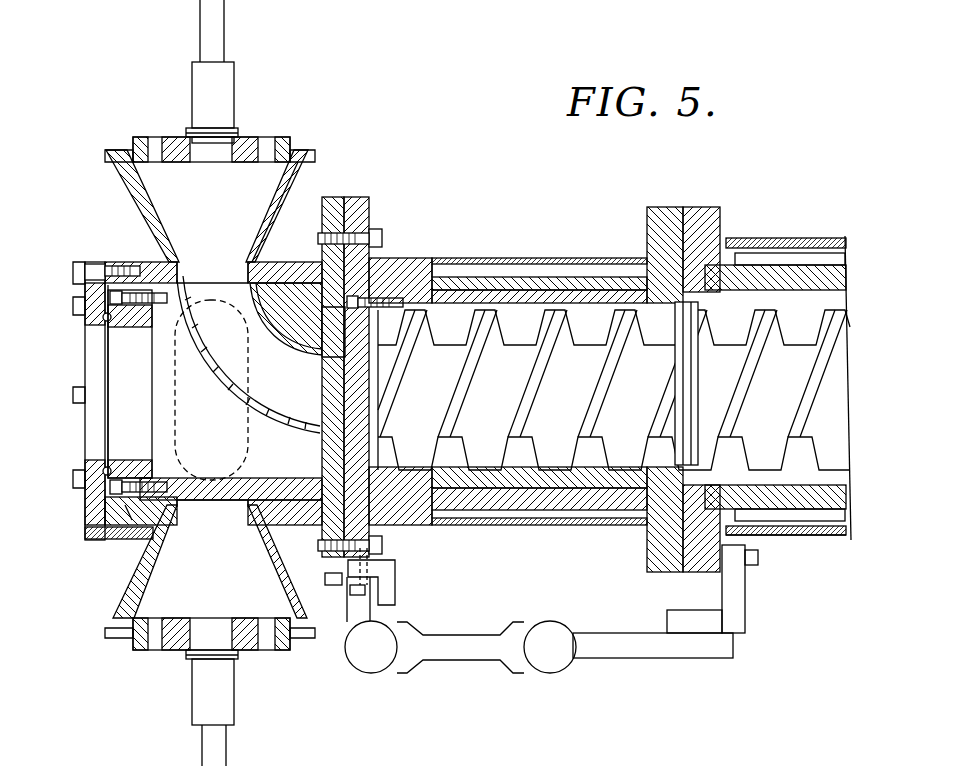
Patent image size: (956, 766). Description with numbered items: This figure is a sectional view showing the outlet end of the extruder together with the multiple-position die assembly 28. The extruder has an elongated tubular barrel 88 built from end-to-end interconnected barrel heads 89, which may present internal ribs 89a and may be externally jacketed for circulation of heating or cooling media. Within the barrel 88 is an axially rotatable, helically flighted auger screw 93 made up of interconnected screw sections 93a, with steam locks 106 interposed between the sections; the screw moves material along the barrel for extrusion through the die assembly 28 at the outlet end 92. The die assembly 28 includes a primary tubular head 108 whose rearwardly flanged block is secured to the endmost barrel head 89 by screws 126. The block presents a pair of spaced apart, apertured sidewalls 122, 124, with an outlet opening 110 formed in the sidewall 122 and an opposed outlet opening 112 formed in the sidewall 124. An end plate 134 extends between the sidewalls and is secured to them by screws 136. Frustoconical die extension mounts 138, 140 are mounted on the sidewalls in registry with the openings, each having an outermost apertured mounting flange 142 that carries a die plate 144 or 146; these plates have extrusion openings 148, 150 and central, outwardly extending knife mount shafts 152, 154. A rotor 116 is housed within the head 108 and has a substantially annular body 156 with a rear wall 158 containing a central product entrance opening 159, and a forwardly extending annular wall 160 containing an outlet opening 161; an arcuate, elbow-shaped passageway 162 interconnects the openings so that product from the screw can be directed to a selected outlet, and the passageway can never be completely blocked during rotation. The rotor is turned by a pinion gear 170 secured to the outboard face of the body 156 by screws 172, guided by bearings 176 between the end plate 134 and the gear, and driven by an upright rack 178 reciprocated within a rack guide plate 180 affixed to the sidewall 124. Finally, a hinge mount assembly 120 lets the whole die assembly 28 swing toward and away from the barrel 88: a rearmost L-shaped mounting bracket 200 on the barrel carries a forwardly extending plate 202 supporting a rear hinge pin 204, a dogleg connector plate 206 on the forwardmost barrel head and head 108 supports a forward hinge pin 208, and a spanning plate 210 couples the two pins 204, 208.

The knife mount shaft 152 is at (205, 30).
The die assembly 28 is at (300, 75).
The extrusion openings 148 is at (158, 140).
The die plate 144 is at (248, 140).
The apertured mounting flange 142 is at (310, 155).
The frustoconical die extension mount 138 is at (135, 195).
The sidewall 122 is at (293, 257).
The outlet opening 110 is at (198, 260).
The primary tubular head 108 is at (143, 250).
The screws 136 is at (50, 262).
The pinion gear 170 is at (130, 325).
The bearings 176 is at (103, 317).
The screws 172 is at (105, 476).
The outlet opening 161 is at (152, 337).
The arcuate, elbow-shaped passageway 162 is at (218, 393).
The rear wall 158 is at (323, 325).
The forwardly extending annular wall 160 is at (252, 482).
The central product entrance opening 159 is at (340, 352).
The rotor 116 is at (155, 422).
The end plate 134 is at (88, 513).
The rack 178 is at (130, 520).
The rack guide plate 180 is at (82, 532).
The frustoconical die extension mount 140 is at (135, 585).
The sidewall 124 is at (278, 580).
The outlet opening 112 is at (195, 527).
The rotor body 156 is at (213, 508).
The die plate 146 is at (177, 650).
The extrusion openings 150 is at (268, 652).
The knife mount shaft 154 is at (243, 765).
The outlet end 92 is at (365, 197).
The screws 126 is at (382, 238).
The barrel 88 is at (800, 195).
The barrel heads 89 is at (718, 222).
The auger screw 93 is at (855, 338).
The screw sections 93a is at (828, 412).
The steam locks 106 is at (685, 455).
The internal ribs 89a is at (778, 532).
The dogleg connector plate 206 is at (395, 585).
The forward hinge pin 208 is at (370, 658).
The spanning plate 210 is at (463, 657).
The rear hinge pin 204 is at (552, 665).
The forwardly extending plate 202 is at (642, 655).
The L-shaped mounting bracket 200 is at (742, 610).
The hinge mount assembly 120 is at (610, 677).